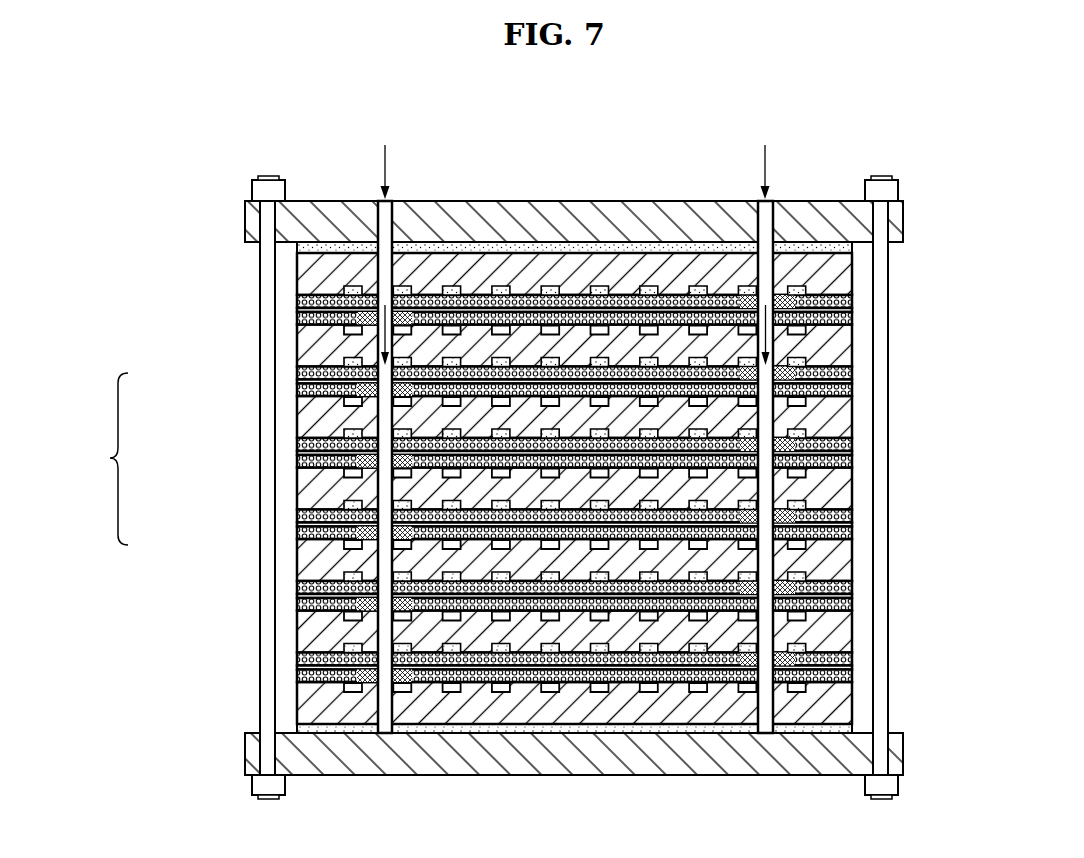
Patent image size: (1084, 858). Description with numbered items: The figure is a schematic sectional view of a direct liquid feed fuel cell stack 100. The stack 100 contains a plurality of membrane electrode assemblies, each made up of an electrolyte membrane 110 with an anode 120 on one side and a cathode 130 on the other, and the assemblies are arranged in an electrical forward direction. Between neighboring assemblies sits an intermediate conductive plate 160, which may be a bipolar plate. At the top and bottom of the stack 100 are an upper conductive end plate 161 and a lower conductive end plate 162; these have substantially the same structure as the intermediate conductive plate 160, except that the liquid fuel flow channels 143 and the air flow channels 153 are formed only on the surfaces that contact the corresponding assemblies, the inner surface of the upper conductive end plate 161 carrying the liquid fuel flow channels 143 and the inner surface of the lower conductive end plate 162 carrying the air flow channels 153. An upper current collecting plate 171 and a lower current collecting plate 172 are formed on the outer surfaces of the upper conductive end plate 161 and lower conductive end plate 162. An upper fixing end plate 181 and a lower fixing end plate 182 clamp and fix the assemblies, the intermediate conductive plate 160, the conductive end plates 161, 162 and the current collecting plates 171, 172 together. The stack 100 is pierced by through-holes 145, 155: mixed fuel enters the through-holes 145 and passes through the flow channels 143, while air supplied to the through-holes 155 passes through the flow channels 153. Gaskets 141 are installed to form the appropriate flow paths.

The fuel cell stack 100 is at (505, 466).
The electrolyte membrane 110 is at (297, 452).
The anode 120 is at (298, 440).
The cathode 130 is at (297, 468).
The gasket 141 is at (360, 604).
The liquid fuel flow channel 143 is at (802, 294).
The through-hole 145 is at (386, 214).
The air flow channel 153 is at (352, 331).
The through-hole 155 is at (770, 212).
The intermediate conductive plate 160 is at (845, 348).
The upper conductive end plate 161 is at (305, 270).
The lower conductive end plate 162 is at (305, 702).
The upper current collecting plate 171 is at (845, 247).
The lower current collecting plate 172 is at (855, 727).
The upper fixing end plate 181 is at (621, 200).
The lower fixing end plate 182 is at (583, 777).